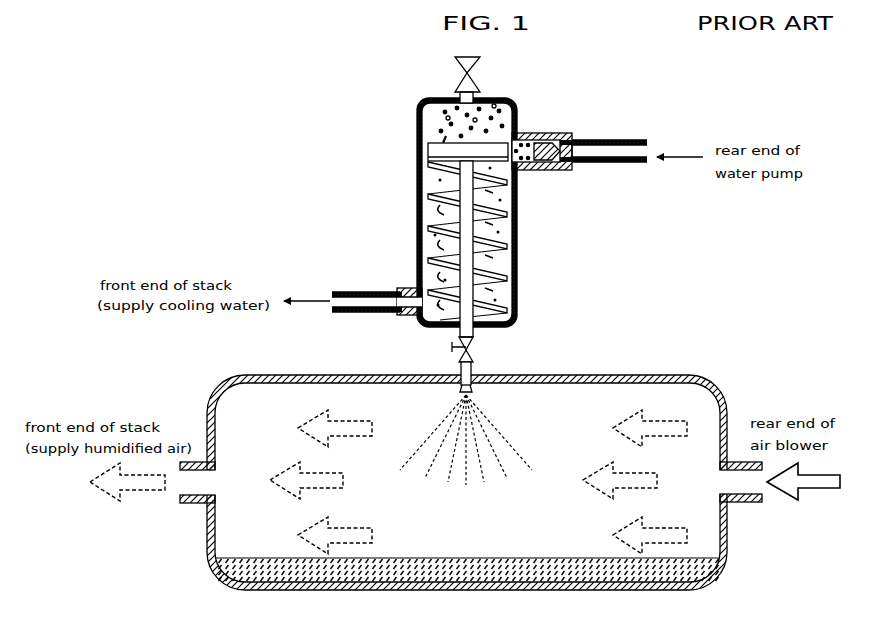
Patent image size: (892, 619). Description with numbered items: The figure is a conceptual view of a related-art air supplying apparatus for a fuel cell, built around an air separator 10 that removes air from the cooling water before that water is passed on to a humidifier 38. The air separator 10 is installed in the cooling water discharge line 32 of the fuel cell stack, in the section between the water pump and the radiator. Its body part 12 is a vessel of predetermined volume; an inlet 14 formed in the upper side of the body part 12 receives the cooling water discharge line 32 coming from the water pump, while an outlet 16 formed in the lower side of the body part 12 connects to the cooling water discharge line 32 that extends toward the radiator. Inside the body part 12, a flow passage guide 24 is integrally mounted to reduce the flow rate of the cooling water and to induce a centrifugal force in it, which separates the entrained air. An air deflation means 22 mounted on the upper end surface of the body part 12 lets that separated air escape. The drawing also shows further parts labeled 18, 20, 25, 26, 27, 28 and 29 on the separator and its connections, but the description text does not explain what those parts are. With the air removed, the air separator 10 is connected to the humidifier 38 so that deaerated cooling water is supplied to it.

The air separator 10 is at (318, 181).
The body part 12 is at (415, 135).
The inlet 14 is at (556, 133).
The outlet 16 is at (410, 322).
The water supply pipe to nozzle 18 is at (477, 367).
The water supply valve 20 is at (477, 348).
The air deflation means 22 is at (485, 93).
The flow passage guide 24 is at (445, 132).
The distribution plate 25 is at (428, 178).
The screw agitator 26 is at (433, 210).
The upper chamber 27 is at (520, 122).
The inlet orifice openings 28 is at (530, 171).
The filter plug 29 is at (547, 171).
The cooling water discharge line 32 is at (630, 138).
The humidifier 38 is at (206, 532).